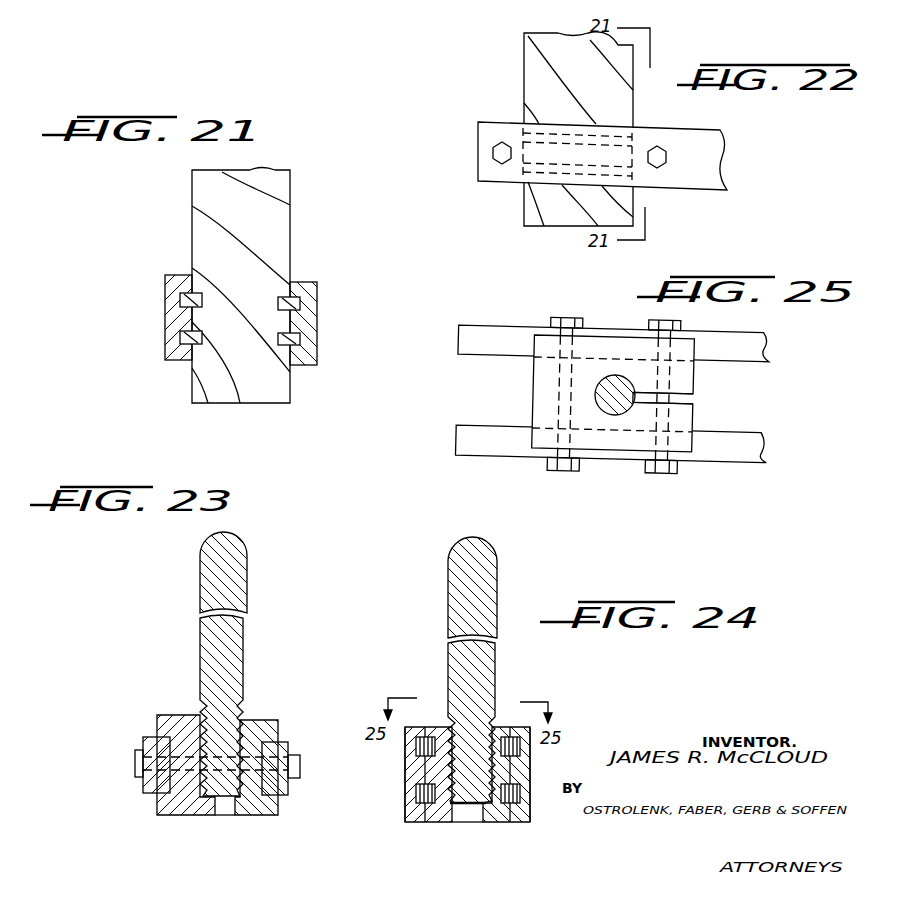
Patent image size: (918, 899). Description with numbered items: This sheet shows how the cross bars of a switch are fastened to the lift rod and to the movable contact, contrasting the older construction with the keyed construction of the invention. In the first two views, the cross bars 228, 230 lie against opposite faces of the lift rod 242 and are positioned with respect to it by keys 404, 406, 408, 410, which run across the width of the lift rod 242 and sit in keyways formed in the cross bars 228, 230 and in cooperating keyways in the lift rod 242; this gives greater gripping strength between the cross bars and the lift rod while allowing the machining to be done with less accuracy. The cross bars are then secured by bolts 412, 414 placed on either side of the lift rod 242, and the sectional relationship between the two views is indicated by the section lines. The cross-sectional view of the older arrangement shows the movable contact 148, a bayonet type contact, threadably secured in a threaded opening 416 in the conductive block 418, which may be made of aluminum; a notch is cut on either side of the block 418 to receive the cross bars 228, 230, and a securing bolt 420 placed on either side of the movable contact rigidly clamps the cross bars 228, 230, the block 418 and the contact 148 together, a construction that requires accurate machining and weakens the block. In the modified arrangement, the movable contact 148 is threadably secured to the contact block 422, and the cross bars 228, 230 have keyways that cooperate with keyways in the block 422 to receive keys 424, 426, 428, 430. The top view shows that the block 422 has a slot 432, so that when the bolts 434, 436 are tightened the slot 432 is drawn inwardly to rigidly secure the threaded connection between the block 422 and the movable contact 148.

In FIG. 25, the movable contact 148 is at (622, 412).
In FIG. 23, the movable contact 148 is at (233, 645).
In FIG. 24, the movable contact 148 is at (462, 603).
In FIG. 21, the cross bar 228 is at (163, 330).
In FIG. 23, the cross bar 228 is at (158, 737).
In FIG. 24, the cross bar 228 is at (418, 822).
In FIG. 21, the cross bar 230 is at (317, 353).
In FIG. 23, the cross bar 230 is at (285, 743).
In FIG. 24, the cross bar 230 is at (517, 823).
In FIG. 21, the lift rod 242 is at (288, 240).
In FIG. 22, the lift rod 242 is at (540, 70).
In FIG. 21, the key 404 is at (178, 298).
In FIG. 22, the key 404 is at (610, 133).
In FIG. 21, the key 406 is at (187, 333).
In FIG. 22, the key 406 is at (567, 175).
In FIG. 21, the key 408 is at (300, 303).
In FIG. 21, the key 410 is at (300, 340).
In FIG. 22, the bolt 412 is at (491, 153).
In FIG. 22, the bolt 414 is at (662, 170).
In FIG. 23, the threaded opening 416 is at (205, 803).
In FIG. 23, the conductive block 418 is at (248, 810).
In FIG. 23, the bolt 420 is at (298, 775).
In FIG. 25, the block 422 is at (542, 392).
In FIG. 24, the block 422 is at (437, 820).
In FIG. 24, the key 424 is at (415, 750).
In FIG. 24, the key 426 is at (415, 792).
In FIG. 24, the key 428 is at (522, 750).
In FIG. 24, the key 430 is at (522, 797).
In FIG. 25, the slot 432 is at (695, 395).
In FIG. 25, the bolt 434 is at (563, 320).
In FIG. 25, the bolt 436 is at (653, 327).